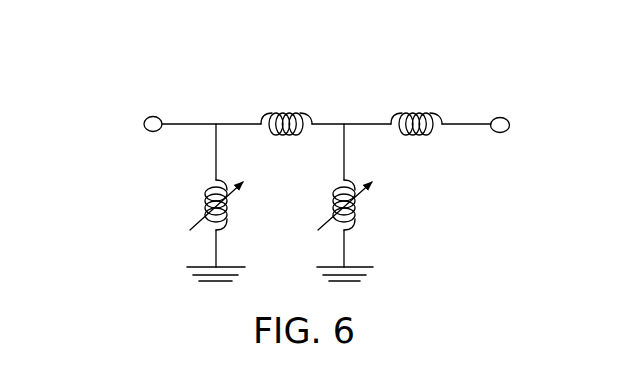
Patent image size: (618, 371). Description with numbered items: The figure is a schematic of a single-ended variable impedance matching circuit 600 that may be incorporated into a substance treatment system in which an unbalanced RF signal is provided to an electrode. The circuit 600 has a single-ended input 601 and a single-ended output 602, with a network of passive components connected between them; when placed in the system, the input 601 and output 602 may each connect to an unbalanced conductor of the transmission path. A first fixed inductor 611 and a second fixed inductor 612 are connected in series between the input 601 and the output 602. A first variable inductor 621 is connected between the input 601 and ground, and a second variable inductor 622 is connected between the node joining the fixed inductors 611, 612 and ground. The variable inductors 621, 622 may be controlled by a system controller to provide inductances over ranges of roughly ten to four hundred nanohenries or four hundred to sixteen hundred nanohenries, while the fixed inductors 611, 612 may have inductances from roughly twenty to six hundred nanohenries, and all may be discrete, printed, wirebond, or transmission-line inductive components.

The single-ended variable impedance matching circuit 600 is at (88, 72).
The single-ended input 601 is at (145, 117).
The single-ended output 602 is at (506, 116).
The first fixed inductor 611 is at (282, 114).
The second fixed inductor 612 is at (406, 114).
The first variable inductor 621 is at (212, 205).
The second variable inductor 622 is at (342, 205).